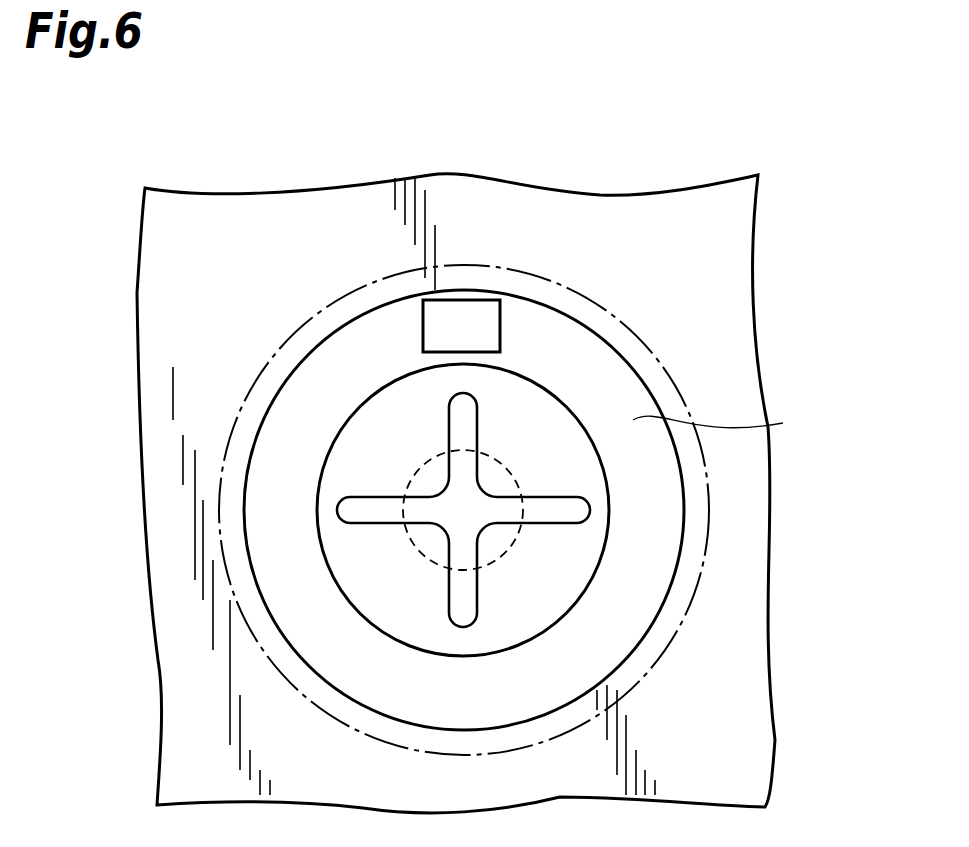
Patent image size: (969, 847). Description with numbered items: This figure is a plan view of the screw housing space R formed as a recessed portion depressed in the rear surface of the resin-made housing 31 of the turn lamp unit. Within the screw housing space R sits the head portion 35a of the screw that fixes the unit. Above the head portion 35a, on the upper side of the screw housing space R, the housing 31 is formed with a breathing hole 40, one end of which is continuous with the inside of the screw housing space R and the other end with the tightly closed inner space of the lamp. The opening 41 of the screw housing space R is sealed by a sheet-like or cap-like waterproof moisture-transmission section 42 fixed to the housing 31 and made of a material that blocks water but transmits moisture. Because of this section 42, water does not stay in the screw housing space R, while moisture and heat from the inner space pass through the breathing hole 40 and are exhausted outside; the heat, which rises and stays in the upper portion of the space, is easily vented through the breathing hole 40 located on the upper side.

The housing 31 is at (730, 257).
The head portion of the screw 35a is at (530, 405).
The screw housing space R is at (725, 422).
The breathing hole 40 is at (462, 317).
The opening 41 is at (632, 573).
The waterproof moisture-transmission section 42 is at (647, 675).